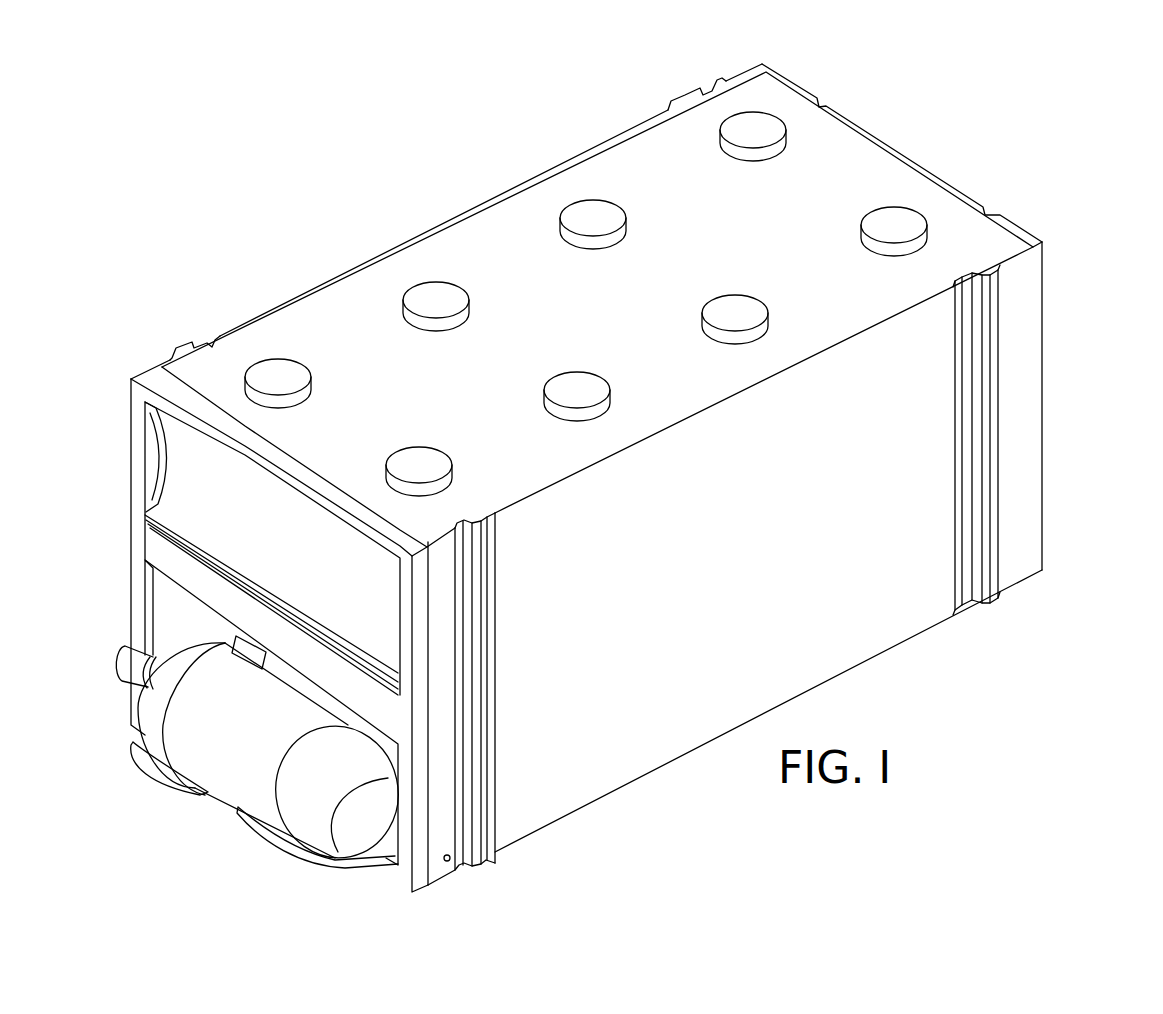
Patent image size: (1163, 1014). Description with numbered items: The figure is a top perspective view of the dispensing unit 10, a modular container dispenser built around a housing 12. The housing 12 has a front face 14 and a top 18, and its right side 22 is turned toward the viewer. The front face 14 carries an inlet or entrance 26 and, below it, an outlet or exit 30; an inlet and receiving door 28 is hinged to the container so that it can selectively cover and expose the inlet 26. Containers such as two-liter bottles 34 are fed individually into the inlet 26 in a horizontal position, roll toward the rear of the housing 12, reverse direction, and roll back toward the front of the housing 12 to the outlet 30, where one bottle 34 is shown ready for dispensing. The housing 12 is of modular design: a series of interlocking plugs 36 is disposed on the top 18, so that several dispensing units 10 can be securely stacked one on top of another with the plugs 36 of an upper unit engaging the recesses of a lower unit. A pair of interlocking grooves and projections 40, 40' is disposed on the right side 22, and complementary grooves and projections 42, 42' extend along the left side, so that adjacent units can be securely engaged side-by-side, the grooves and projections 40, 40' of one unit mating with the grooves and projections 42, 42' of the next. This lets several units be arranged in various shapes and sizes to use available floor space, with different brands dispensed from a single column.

The dispensing unit 10 is at (1102, 196).
The housing 12 is at (1043, 385).
The front face 14 is at (260, 620).
The top 18 is at (616, 328).
The right side 22 is at (734, 578).
The inlet 26 is at (142, 418).
The inlet and receiving door 28 is at (300, 557).
The outlet 30 is at (150, 605).
The two-liter bottles 34 is at (252, 753).
The interlocking plugs 36 is at (896, 207).
The interlocking grooves and projections 40 is at (534, 699).
The interlocking grooves and projections 40' is at (1032, 440).
The complementary grooves and projections 42 is at (195, 312).
The complementary grooves and projections 42' is at (705, 70).